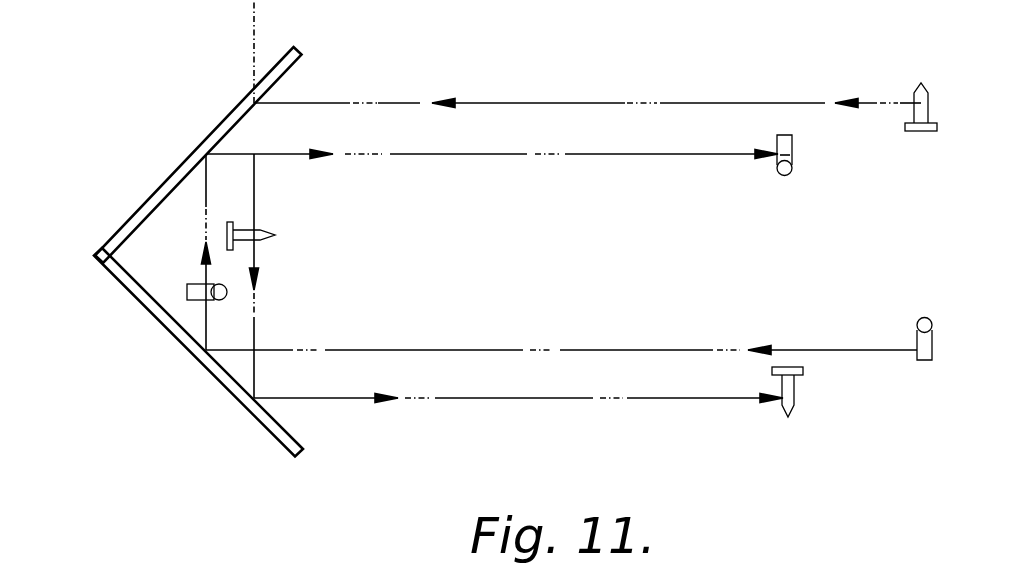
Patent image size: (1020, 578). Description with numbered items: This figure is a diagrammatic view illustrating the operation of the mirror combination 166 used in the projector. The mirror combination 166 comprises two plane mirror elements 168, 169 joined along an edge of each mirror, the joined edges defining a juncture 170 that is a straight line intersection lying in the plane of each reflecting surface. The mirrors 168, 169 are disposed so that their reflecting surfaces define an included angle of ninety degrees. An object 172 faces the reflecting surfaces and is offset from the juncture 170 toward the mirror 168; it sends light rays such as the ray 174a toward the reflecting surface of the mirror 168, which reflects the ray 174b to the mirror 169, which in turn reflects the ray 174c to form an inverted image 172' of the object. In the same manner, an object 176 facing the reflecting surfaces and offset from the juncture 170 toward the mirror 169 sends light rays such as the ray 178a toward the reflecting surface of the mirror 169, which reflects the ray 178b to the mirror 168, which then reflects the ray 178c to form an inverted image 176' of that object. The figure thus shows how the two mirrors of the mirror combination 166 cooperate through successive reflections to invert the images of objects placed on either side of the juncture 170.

The mirror combination 166 is at (220, 260).
The plane mirror element 168 is at (290, 66).
The plane mirror element 169 is at (292, 438).
The juncture 170 is at (122, 257).
The object 172 is at (892, 90).
The inverted image 172' is at (823, 395).
The ray 174a is at (587, 86).
The ray 174b is at (258, 177).
The ray 174c is at (473, 400).
The object 176 is at (925, 373).
The inverted image 176' is at (833, 160).
The ray 178a is at (590, 350).
The ray 178b is at (207, 332).
The ray 178c is at (485, 156).